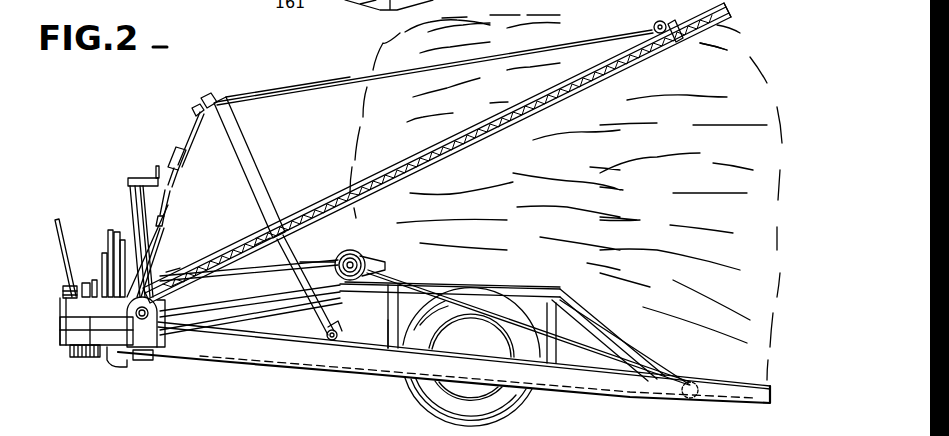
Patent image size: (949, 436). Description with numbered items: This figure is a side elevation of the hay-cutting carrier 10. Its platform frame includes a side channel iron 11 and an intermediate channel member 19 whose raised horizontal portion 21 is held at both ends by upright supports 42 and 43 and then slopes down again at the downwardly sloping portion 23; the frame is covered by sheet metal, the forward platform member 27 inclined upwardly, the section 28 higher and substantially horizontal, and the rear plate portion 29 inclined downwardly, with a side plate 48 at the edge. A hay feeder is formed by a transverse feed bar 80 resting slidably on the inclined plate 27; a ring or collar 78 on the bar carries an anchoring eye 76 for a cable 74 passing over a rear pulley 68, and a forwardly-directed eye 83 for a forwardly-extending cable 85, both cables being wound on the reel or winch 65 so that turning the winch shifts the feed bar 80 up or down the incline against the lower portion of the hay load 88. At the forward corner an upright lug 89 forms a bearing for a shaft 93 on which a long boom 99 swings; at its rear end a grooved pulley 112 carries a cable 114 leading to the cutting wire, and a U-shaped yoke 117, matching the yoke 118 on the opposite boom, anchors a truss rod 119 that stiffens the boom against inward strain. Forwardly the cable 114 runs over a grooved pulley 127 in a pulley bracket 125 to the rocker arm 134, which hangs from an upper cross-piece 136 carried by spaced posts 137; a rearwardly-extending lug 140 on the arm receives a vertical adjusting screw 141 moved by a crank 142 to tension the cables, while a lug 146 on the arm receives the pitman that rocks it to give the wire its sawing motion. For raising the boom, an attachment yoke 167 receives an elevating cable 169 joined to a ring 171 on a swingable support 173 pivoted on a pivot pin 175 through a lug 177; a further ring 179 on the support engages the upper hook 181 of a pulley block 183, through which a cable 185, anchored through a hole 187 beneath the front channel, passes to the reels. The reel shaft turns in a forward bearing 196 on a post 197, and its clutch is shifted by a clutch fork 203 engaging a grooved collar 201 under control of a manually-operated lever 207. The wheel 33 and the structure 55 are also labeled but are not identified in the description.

The carrier 10 is at (156, 166).
The side channel iron 11 is at (350, 372).
The intermediate channel member 19 is at (282, 310).
The raised horizontal portion 21 is at (532, 287).
The downwardly sloping channel portion 23 is at (608, 325).
The sheet metal platform member 27 is at (290, 287).
The platform section 28 is at (463, 281).
The rear plate portion 29 is at (580, 295).
The wheel 33 is at (428, 394).
The upright support 42 is at (384, 317).
The upright support 43 is at (562, 360).
The side plate 48 is at (390, 342).
The platform 55 is at (90, 335).
The reel or winch 65 is at (76, 357).
The rear pulley 68 is at (695, 380).
The cable 74 is at (660, 362).
The anchoring eye 76 is at (380, 271).
The ring or collar 78 is at (375, 261).
The transverse feed bar 80 is at (352, 250).
The forwardly-directed eye 83 is at (336, 261).
The forwardly-extending cable 85 is at (248, 297).
The hay load 88 is at (355, 135).
The upright lug 89 is at (158, 341).
The shaft 93 is at (142, 322).
The boom 99 is at (491, 134).
The grooved pulley 112 is at (733, 13).
The cable 114 is at (258, 244).
The U-shaped yoke 117 is at (702, 61).
The yoke 118 is at (678, 19).
The truss rod 119 is at (278, 258).
The pulley bracket 125 is at (172, 270).
The grooved pulley 127 is at (176, 284).
The rocker arm 134 is at (166, 230).
The upper cross-piece 136 is at (132, 177).
The post 137 is at (130, 212).
The rearwardly-extending lug 140 is at (136, 177).
The vertical adjusting screw 141 is at (172, 200).
The crank 142 is at (182, 156).
The lug 146 is at (167, 214).
The attachment yoke 167 is at (658, 20).
The elevating cable 169 is at (333, 82).
The ring or loop 171 is at (228, 96).
The swingable support 173 is at (265, 181).
The pivot pin 175 is at (328, 343).
The lug 177 is at (341, 328).
The ring or loop 179 is at (206, 98).
The upper hook 181 is at (193, 109).
The pulley block 183 is at (187, 157).
The cable 185 is at (180, 178).
The hole 187 is at (150, 360).
The forward bearing 196 is at (62, 293).
The post 197 is at (62, 315).
The grooved collar 201 is at (84, 283).
The clutch fork 203 is at (96, 268).
The manually-operated lever 207 is at (57, 220).